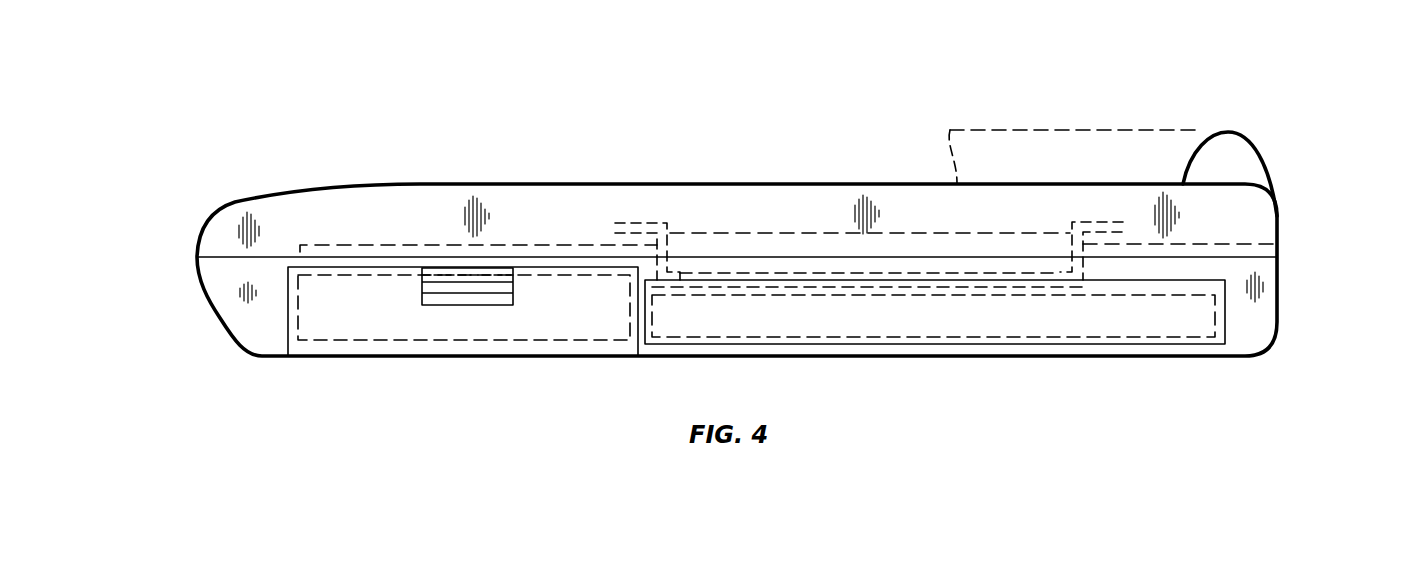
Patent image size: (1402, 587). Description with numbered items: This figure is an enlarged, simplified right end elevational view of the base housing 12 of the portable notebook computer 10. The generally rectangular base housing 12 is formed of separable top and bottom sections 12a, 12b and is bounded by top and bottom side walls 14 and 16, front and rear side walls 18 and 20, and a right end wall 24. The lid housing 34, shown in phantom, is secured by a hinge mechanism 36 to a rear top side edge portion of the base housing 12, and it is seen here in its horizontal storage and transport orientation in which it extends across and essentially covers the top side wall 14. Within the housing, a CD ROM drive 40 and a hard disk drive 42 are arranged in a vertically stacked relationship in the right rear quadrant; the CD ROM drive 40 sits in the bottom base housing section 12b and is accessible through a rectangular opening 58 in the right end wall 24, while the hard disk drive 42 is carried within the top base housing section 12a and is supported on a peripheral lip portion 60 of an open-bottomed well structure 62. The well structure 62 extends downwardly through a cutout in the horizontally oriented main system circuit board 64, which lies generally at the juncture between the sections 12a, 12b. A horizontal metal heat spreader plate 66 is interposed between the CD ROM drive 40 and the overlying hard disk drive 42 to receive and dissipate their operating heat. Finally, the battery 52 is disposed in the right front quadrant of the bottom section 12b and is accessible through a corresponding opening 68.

The portable notebook computer 10 is at (273, 142).
The base housing 12 is at (1288, 250).
The top base housing section 12a is at (426, 222).
The bottom base housing section 12b is at (264, 302).
The top side wall 14 is at (805, 183).
The bottom side wall 16 is at (345, 358).
The front side wall 18 is at (200, 242).
The rear side wall 20 is at (1280, 290).
The right end wall 24 is at (545, 221).
The lid housing 34 is at (1096, 130).
The hinge mechanism 36 is at (1262, 152).
The CD ROM drive 40 is at (1172, 336).
The hard disk drive 42 is at (703, 233).
The battery 52 is at (407, 340).
The rectangular opening 58 is at (1222, 314).
The peripheral lip portion 60 is at (1066, 272).
The well structure 62 is at (670, 247).
The main system circuit board 64 is at (1216, 245).
The heat spreader plate 66 is at (1103, 286).
The opening 68 is at (598, 268).